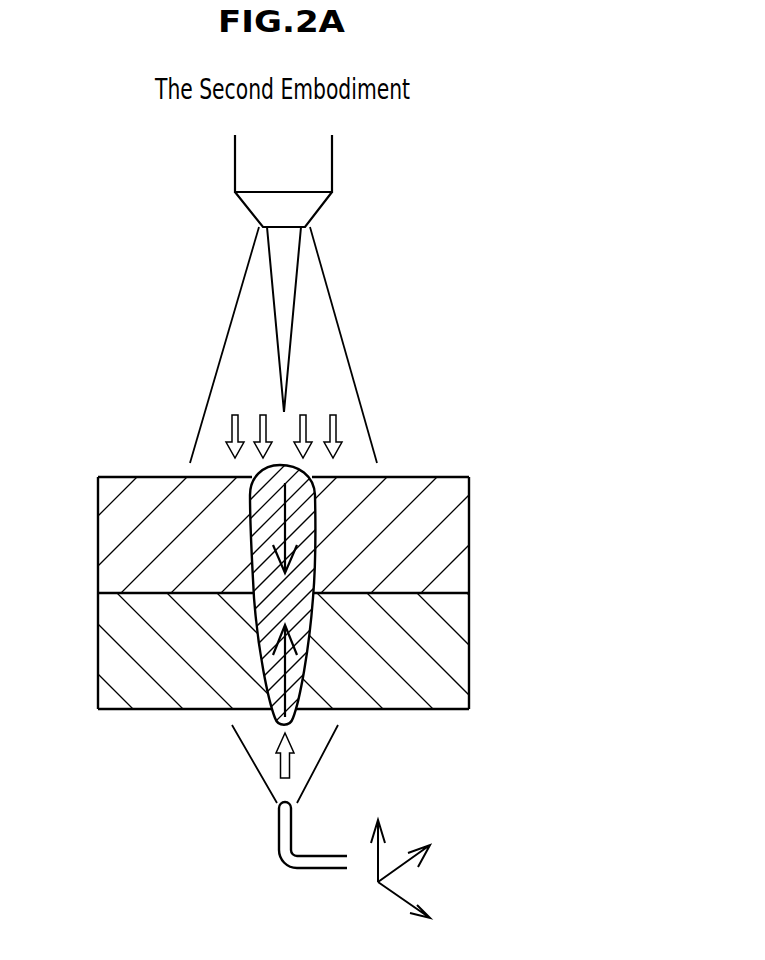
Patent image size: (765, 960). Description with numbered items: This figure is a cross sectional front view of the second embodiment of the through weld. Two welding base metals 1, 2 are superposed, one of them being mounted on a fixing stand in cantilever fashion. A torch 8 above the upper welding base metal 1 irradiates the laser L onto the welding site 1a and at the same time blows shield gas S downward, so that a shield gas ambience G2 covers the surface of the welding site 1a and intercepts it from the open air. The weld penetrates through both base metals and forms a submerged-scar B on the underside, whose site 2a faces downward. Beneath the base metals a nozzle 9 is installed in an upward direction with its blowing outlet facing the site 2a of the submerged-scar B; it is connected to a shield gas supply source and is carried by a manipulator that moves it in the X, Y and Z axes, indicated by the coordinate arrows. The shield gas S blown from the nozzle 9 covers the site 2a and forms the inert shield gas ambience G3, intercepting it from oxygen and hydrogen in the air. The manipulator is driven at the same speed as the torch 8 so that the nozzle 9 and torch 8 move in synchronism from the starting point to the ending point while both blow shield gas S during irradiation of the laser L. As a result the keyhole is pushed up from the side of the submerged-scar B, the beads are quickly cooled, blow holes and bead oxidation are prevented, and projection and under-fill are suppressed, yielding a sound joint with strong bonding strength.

The torch 8 is at (285, 198).
The laser L is at (288, 266).
The shield gas ambience G2 is at (231, 315).
The shield gas S is at (330, 338).
The upper welding base metal 1 is at (459, 527).
The welding base metal 2 is at (460, 662).
The welding site 1a is at (306, 472).
The site of the submerged-scar 2a is at (296, 714).
The submerged-scar B is at (273, 713).
The shield gas ambience G3 is at (307, 763).
The nozzle 9 is at (272, 842).
The Y axis Y is at (376, 834).
The Z axis Z is at (412, 852).
The X axis X is at (413, 908).